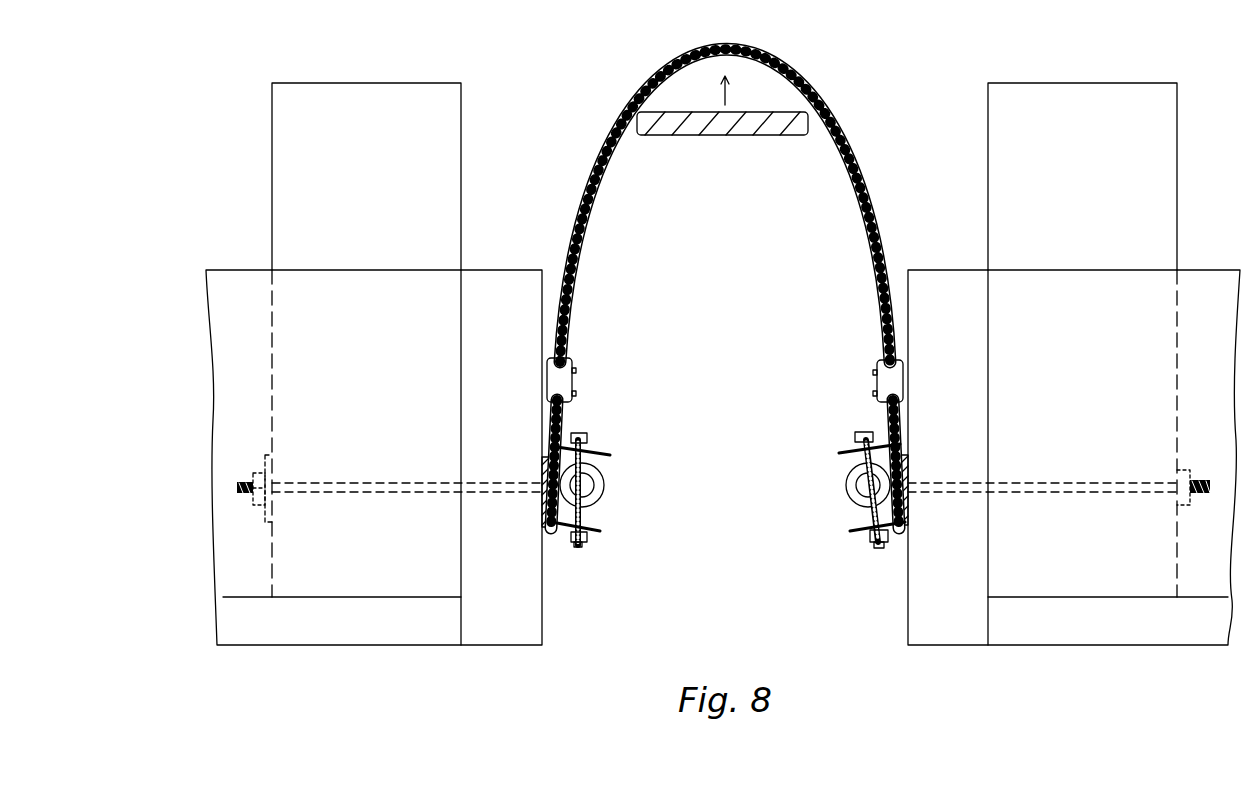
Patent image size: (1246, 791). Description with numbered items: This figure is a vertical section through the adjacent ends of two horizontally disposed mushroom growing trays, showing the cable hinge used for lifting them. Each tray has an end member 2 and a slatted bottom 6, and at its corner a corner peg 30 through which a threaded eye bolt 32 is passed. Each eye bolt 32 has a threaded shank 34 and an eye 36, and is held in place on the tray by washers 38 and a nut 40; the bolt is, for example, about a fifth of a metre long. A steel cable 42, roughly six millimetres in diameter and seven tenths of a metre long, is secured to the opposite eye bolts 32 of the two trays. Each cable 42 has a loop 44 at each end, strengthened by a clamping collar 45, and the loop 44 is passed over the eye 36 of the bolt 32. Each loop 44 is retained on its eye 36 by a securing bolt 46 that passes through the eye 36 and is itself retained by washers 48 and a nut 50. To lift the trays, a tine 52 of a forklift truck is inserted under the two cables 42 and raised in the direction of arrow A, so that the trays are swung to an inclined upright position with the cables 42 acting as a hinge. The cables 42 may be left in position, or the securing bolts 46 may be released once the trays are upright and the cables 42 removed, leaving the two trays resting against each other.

The end member 2 is at (492, 296).
The slatted bottom 6 is at (1026, 626).
The corner peg 30 is at (398, 97).
The threaded eye bolt 32 is at (345, 489).
The threaded shank 34 is at (250, 480).
The eye 36 is at (600, 505).
The washer 38 is at (272, 462).
The nut 40 is at (255, 505).
The steel cable 42 is at (634, 98).
The loop 44 is at (556, 530).
The clamping collar 45 is at (574, 384).
The securing bolt 46 is at (590, 440).
The washer 48 is at (846, 462).
The nut 50 is at (870, 542).
The tine 52 is at (759, 128).